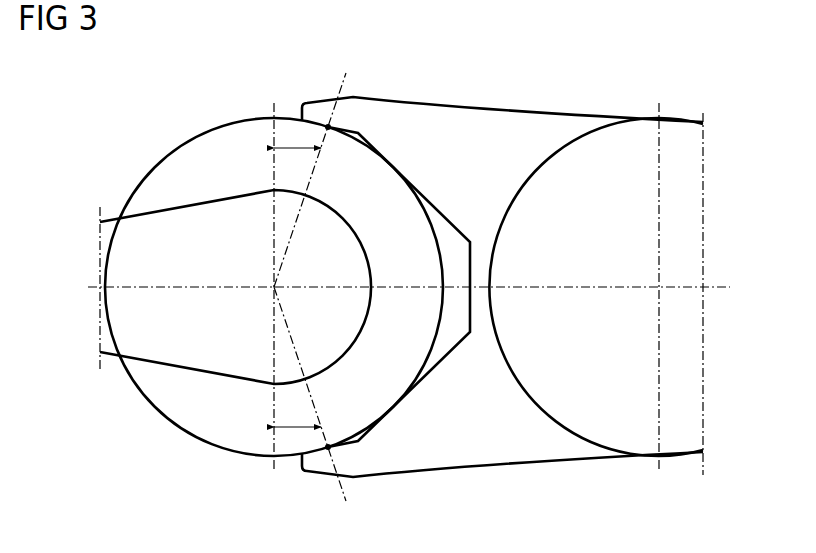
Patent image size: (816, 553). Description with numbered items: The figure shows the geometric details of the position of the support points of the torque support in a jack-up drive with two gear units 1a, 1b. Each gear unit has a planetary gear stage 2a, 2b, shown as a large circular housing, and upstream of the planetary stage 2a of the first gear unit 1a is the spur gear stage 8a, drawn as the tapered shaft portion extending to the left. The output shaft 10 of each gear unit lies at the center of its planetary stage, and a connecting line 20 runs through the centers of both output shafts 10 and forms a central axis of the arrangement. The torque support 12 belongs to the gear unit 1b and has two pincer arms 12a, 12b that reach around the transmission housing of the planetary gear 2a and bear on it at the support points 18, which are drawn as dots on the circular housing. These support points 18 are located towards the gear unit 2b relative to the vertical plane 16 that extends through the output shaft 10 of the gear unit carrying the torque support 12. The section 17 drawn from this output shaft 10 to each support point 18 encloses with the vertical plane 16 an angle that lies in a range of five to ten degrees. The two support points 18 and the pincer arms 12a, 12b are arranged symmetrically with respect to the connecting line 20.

The gear unit 1a is at (242, 256).
The gear unit 1b is at (522, 285).
The planetary gear stage 2a is at (155, 163).
The planetary gear stage 2b is at (553, 424).
The spur gear stage 8a is at (113, 243).
The gearbox output shaft 10 is at (271, 290).
The torque support 12 is at (502, 291).
The pincer arm 12a is at (318, 113).
The pincer arm 12b is at (318, 469).
The vertical plane 16 is at (273, 108).
The section 17 is at (346, 78).
The support point 18 is at (331, 131).
The connecting line 20 is at (563, 292).